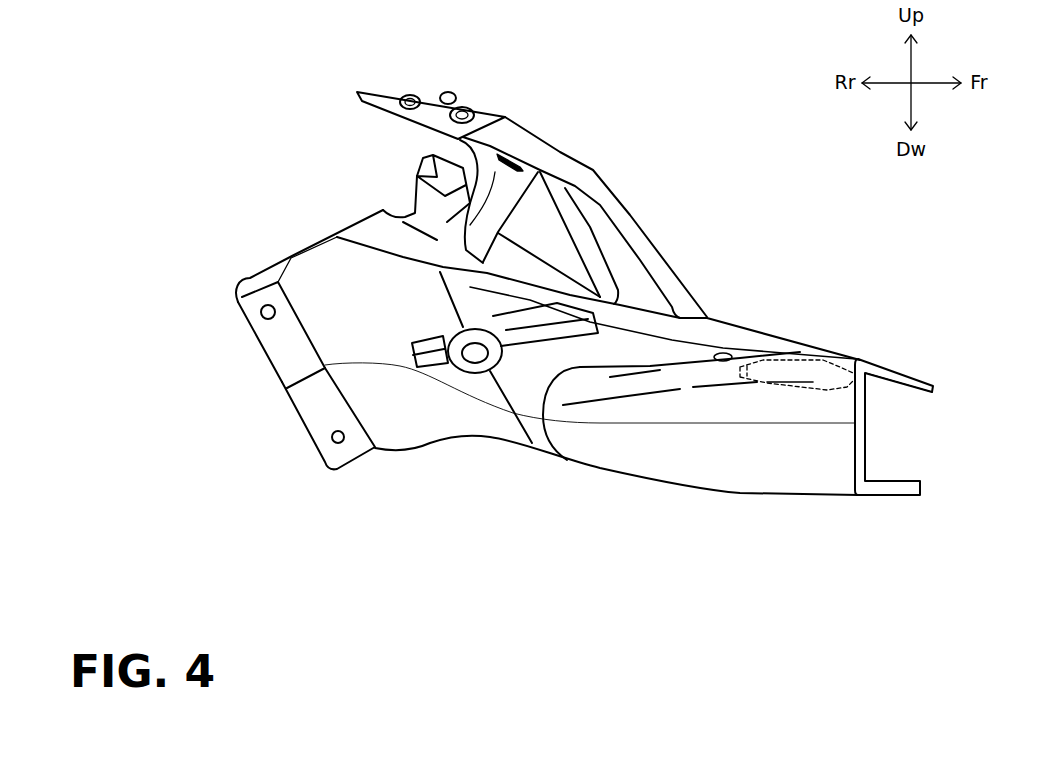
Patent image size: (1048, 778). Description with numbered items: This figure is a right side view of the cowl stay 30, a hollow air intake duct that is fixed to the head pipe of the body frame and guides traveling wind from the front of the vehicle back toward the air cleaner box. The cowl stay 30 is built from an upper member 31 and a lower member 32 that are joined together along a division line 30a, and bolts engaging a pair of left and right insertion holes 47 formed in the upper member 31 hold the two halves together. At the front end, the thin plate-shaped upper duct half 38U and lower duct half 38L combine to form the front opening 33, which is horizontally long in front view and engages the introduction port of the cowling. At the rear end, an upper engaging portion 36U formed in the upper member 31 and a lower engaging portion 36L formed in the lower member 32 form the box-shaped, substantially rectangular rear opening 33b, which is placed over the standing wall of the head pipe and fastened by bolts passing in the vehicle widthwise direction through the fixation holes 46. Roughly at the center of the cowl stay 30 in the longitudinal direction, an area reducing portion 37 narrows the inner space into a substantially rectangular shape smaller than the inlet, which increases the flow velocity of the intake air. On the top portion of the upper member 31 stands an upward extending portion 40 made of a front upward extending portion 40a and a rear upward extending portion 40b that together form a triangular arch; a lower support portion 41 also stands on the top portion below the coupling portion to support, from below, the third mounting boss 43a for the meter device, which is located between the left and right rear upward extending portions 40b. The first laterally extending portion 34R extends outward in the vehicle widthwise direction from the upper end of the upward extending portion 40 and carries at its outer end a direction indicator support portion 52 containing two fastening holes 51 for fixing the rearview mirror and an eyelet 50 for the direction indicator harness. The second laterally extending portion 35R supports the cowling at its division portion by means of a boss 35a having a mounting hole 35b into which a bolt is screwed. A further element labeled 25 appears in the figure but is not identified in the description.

The attachment component (shown in phantom) 25 is at (840, 363).
The cowl stay 30 is at (808, 219).
The division line 30a is at (620, 427).
The upper member 31 is at (777, 329).
The lower member 32 is at (701, 494).
The front opening 33 is at (912, 438).
The rear opening 33b is at (229, 326).
The first laterally extending portion 34R is at (537, 143).
The boss 35a is at (458, 365).
The mounting hole 35b is at (478, 358).
The second laterally extending portion 35R is at (532, 334).
The upper engaging portion 36U is at (272, 352).
The lower engaging portion 36L is at (302, 402).
The area reducing portion 37 is at (497, 435).
The upper duct half 38U is at (908, 388).
The lower duct half 38L is at (906, 473).
The upward extending portion 40 is at (741, 88).
The front upward extending portion 40a is at (640, 232).
The rear upward extending portion 40b is at (576, 170).
The lower support portion 41 is at (578, 200).
The third mounting boss 43a is at (423, 162).
The fixation holes 46 is at (268, 303).
The insertion holes 47 is at (725, 352).
The eyelet 50 is at (450, 91).
The fastening holes 51 is at (411, 94).
The direction indicator support portion 52 is at (507, 106).